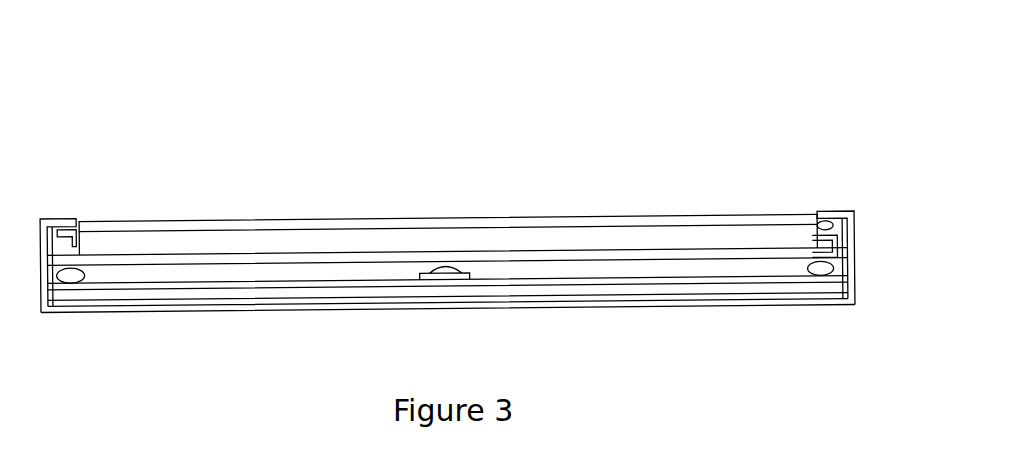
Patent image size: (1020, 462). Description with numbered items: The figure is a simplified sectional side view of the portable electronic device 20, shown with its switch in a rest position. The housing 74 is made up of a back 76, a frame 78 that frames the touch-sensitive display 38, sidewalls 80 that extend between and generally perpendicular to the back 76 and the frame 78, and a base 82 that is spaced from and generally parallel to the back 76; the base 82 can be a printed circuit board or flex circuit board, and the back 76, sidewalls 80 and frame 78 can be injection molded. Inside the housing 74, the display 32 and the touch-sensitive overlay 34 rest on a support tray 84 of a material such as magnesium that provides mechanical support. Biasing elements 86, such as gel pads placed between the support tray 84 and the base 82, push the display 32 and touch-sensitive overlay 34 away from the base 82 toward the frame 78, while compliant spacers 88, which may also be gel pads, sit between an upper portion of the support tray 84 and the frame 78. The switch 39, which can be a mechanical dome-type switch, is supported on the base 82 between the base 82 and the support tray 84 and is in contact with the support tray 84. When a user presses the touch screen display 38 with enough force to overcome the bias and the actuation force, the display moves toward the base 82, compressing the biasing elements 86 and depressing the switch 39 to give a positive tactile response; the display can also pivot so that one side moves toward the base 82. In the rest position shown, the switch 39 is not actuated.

The portable electronic device 20 is at (650, 106).
The display 32 is at (349, 240).
The touch-sensitive overlay 34 is at (422, 226).
The touch-sensitive display 38 is at (166, 210).
The switch 39 is at (447, 275).
The housing 74 is at (55, 324).
The back 76 is at (513, 303).
The frame 78 is at (66, 222).
The sidewalls 80 is at (852, 282).
The base 82 is at (273, 283).
The support tray 84 is at (834, 246).
The biasing elements 86 is at (824, 270).
The compliant spacers 88 is at (828, 223).